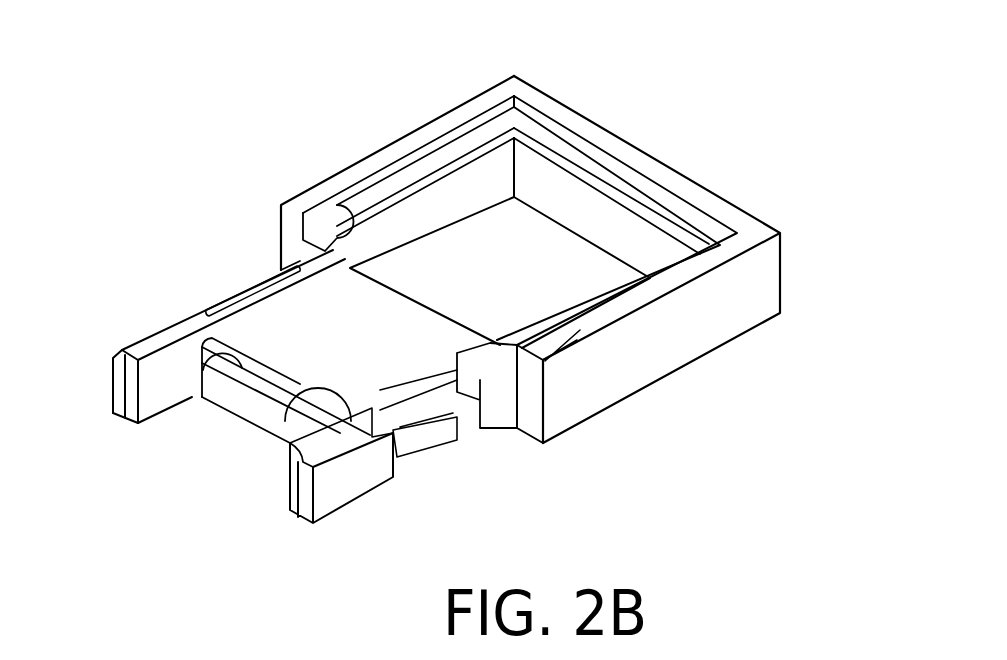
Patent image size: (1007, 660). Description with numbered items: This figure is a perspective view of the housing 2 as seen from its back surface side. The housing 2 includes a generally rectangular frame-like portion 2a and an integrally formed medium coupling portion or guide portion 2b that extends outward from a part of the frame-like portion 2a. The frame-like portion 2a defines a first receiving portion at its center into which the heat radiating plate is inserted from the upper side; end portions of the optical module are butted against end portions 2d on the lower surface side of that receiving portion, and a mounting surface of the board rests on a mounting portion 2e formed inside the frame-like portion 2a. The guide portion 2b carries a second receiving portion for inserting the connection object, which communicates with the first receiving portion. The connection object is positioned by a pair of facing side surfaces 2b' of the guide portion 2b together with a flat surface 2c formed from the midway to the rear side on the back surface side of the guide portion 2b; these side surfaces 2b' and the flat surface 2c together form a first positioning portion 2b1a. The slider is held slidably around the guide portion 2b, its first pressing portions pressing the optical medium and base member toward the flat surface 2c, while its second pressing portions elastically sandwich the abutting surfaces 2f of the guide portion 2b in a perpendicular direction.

The housing 2 is at (396, 141).
The frame-like portion 2a is at (667, 165).
The guide portion 2b is at (204, 336).
The side surfaces 2b' is at (254, 486).
The first positioning portion 2b1a is at (323, 350).
The flat surface 2c is at (318, 336).
The end portions 2d is at (328, 246).
The mounting portion 2e is at (580, 176).
The abutting surfaces 2f is at (230, 290).